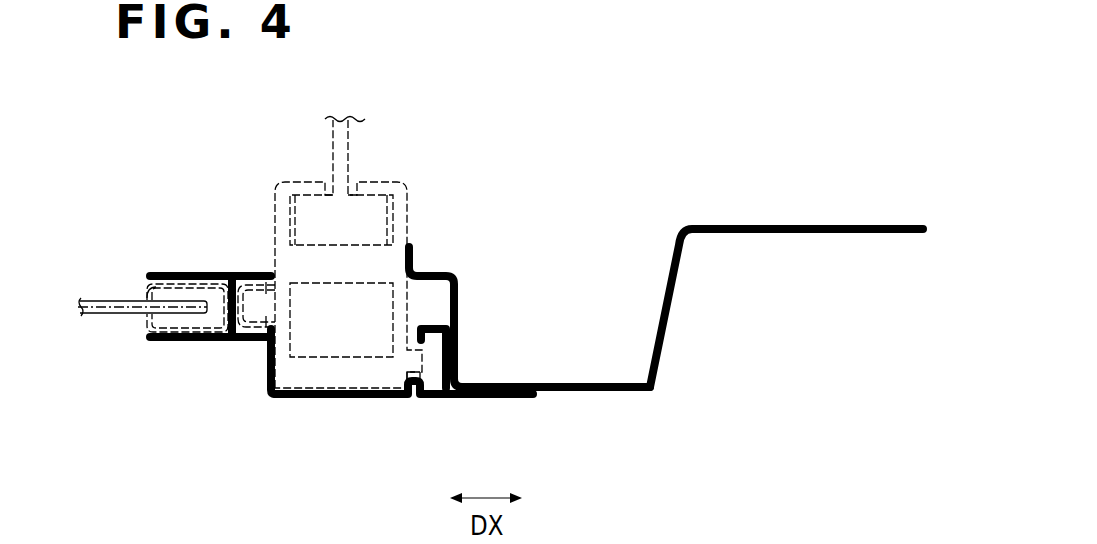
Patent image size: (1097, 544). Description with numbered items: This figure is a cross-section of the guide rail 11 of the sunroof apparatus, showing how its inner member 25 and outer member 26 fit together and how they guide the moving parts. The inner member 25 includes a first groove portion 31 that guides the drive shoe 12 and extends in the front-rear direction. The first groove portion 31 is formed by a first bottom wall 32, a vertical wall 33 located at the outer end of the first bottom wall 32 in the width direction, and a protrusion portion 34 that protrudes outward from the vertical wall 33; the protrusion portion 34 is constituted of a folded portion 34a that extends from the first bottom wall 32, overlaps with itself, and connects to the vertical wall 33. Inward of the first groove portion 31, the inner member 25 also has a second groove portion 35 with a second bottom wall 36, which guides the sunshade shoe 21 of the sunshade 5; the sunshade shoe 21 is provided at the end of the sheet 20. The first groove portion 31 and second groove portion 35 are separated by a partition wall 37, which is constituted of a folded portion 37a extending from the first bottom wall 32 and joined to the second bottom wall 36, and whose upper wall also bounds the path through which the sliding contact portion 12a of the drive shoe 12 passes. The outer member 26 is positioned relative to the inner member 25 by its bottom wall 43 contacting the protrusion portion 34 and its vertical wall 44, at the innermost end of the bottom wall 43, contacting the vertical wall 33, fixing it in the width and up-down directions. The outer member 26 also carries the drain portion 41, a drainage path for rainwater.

The sunshade 5 is at (110, 238).
The guide rail 11 is at (691, 136).
The drive shoe 12 is at (377, 181).
The sliding contact portion 12a is at (270, 275).
The sheet 20 is at (97, 314).
The sunshade shoe 21 is at (146, 323).
The inner member 25 is at (252, 431).
The outer member 26 is at (573, 232).
The first groove portion 31 is at (270, 368).
The first bottom wall 32 is at (333, 400).
The vertical wall 33 is at (455, 345).
The protrusion portion 34 is at (493, 399).
The folded portion 34a is at (528, 399).
The second groove portion 35 is at (145, 292).
The second bottom wall 36 is at (205, 342).
The partition wall 37 is at (238, 272).
The folded portion 37a is at (200, 272).
The drain portion 41 is at (668, 277).
The bottom wall 43 is at (513, 383).
The vertical wall 44 is at (462, 294).